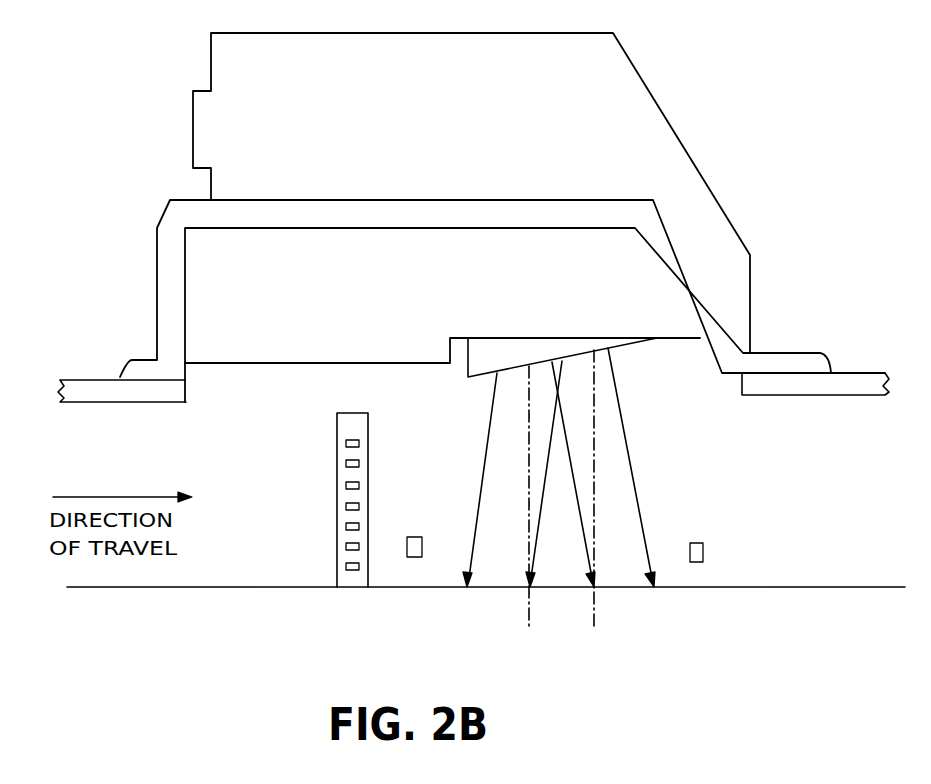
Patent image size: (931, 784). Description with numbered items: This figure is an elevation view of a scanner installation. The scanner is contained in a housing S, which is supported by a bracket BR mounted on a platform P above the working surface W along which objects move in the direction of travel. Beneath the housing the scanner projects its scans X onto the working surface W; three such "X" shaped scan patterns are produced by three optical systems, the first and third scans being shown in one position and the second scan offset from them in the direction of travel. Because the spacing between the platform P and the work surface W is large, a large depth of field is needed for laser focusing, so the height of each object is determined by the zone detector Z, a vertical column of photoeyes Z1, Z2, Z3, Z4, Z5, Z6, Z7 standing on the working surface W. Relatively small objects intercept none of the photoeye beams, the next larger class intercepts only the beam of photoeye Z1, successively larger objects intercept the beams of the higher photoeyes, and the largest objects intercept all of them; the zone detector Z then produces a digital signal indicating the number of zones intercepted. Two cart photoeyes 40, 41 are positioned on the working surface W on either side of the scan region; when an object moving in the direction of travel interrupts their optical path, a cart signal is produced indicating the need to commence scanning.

The housing S is at (211, 65).
The bracket BR is at (157, 228).
The platform P is at (100, 386).
The working surface W is at (741, 587).
The zone detector Z is at (332, 428).
The photoeye Z1 is at (352, 571).
The photoeye Z2 is at (346, 546).
The photoeye Z3 is at (346, 527).
The photoeye Z4 is at (359, 507).
The photoeye Z5 is at (346, 485).
The photoeye Z6 is at (359, 463).
The photoeye Z7 is at (346, 443).
The start cart photoeye 40 is at (422, 547).
The end cart photoeye 41 is at (703, 552).
The scan X is at (529, 622).